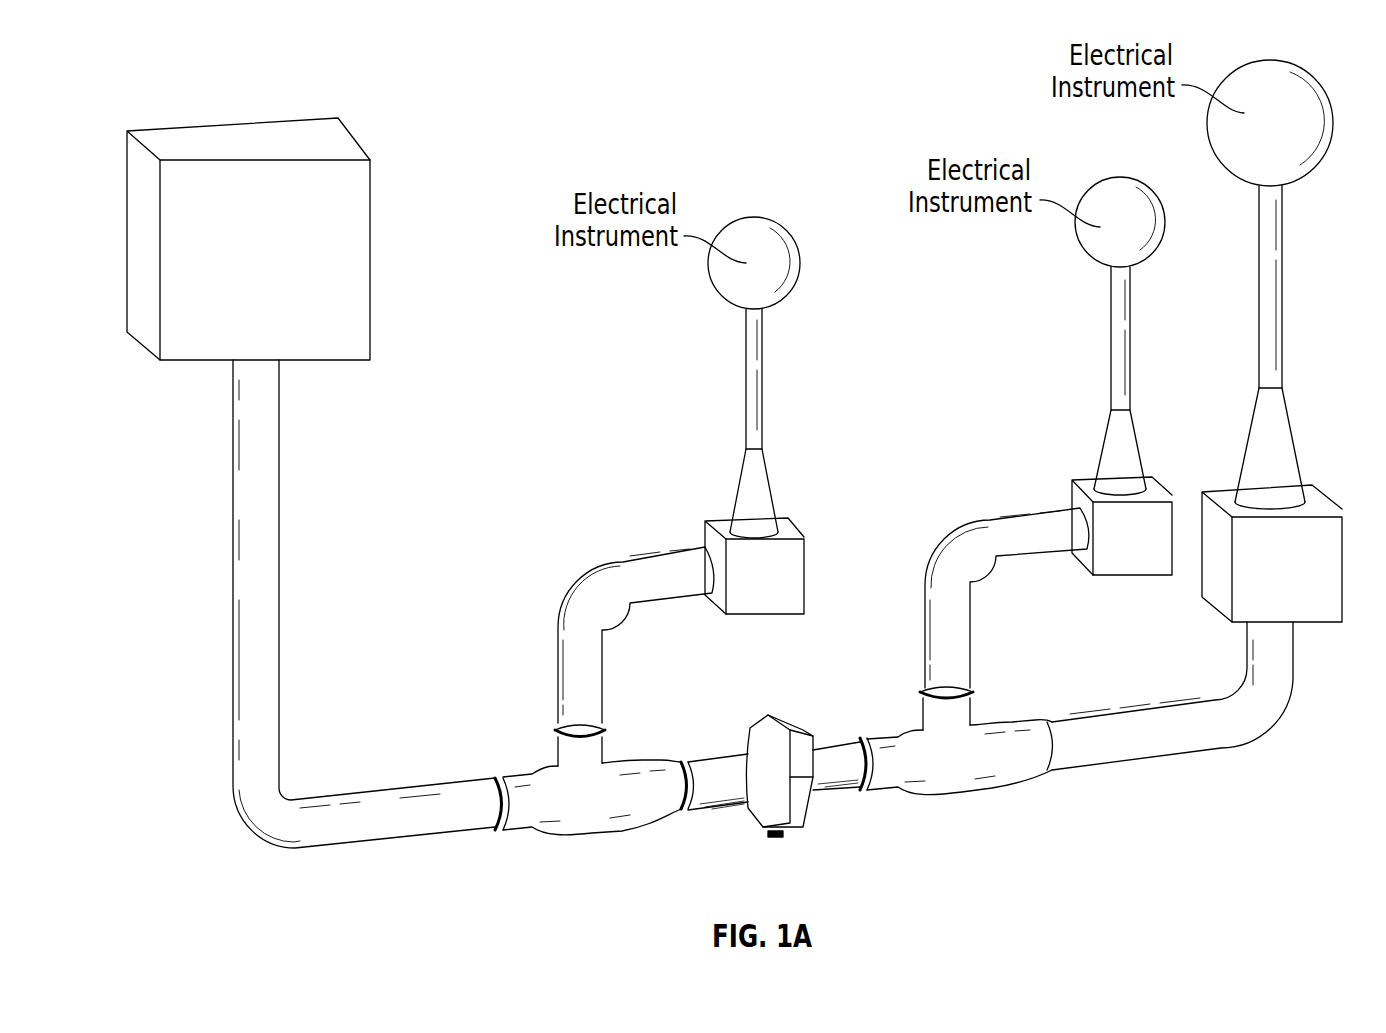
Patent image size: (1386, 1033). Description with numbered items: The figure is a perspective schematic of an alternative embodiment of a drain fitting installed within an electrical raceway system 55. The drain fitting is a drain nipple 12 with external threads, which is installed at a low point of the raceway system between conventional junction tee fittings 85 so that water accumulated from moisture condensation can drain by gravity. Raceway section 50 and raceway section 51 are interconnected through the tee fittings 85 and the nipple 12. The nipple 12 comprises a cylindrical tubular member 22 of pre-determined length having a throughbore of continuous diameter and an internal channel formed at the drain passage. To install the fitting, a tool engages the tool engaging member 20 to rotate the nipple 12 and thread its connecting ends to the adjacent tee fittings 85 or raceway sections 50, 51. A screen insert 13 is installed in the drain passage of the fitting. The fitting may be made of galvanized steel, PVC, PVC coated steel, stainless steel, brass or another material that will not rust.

The electrical raceway system 55 is at (447, 63).
The raceway section 50 is at (340, 824).
The junction tee fitting 85 is at (584, 836).
The drain nipple 12 is at (713, 762).
The tool engaging member 20 is at (792, 727).
The cylindrical tubular member 22 is at (835, 779).
The screen insert 13 is at (775, 840).
The raceway section 51 is at (1165, 737).